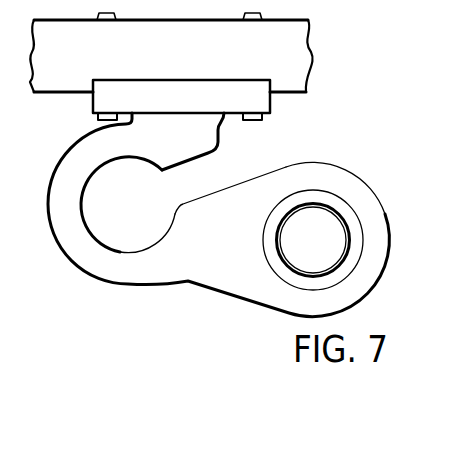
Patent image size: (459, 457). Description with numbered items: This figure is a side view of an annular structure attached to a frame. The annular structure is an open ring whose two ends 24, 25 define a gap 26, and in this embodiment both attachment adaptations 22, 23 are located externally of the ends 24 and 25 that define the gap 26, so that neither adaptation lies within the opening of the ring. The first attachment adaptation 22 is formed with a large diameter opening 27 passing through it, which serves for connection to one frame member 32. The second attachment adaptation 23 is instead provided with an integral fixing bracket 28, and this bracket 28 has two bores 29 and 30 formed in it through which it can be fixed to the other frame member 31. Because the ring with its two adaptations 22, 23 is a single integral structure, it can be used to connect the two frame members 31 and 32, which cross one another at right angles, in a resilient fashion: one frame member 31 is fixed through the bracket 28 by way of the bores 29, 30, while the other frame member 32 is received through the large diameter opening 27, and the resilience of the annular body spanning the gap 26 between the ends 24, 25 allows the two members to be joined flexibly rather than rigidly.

The attachment adaptation 22 is at (187, 235).
The attachment adaptation 23 is at (208, 137).
The end 24 is at (160, 250).
The end 25 is at (122, 140).
The gap 26 is at (202, 173).
The large diameter opening 27 is at (352, 203).
The integral fixing bracket 28 is at (93, 110).
The bore 29 is at (98, 122).
The bore 30 is at (265, 116).
The frame member 31 is at (290, 36).
The frame member 32 is at (345, 267).